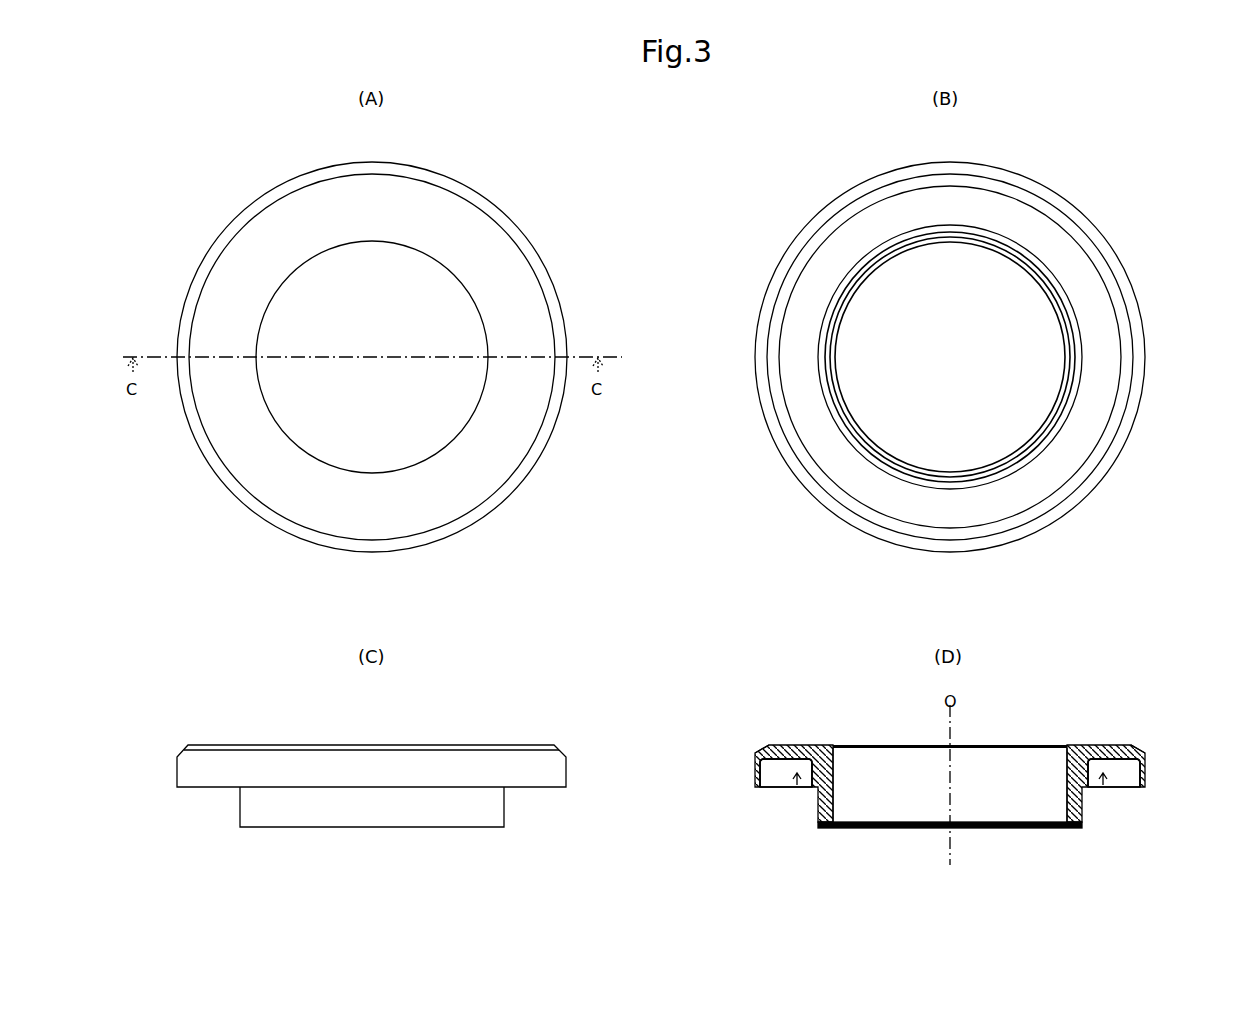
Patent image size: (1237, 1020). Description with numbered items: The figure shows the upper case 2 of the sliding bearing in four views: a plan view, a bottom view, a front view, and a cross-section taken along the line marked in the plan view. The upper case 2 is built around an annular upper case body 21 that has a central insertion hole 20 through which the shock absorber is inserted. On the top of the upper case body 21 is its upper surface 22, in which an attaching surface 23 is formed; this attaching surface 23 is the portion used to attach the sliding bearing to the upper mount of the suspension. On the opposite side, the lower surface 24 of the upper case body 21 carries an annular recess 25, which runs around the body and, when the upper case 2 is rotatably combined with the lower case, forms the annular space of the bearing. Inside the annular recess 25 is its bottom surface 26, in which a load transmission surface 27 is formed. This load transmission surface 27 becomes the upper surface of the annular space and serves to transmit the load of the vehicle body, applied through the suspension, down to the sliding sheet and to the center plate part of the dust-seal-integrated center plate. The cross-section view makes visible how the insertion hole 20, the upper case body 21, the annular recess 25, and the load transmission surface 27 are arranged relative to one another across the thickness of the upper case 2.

The upper case 2 is at (567, 164).
The insertion hole 20 is at (303, 303).
The upper case body 21 is at (542, 258).
The upper surface 22 is at (443, 202).
The attaching surface 23 is at (458, 230).
The lower surface 24 is at (1120, 290).
The annular recess 25 is at (1112, 360).
The bottom surface 26 is at (784, 786).
The load transmission surface 27 is at (810, 790).